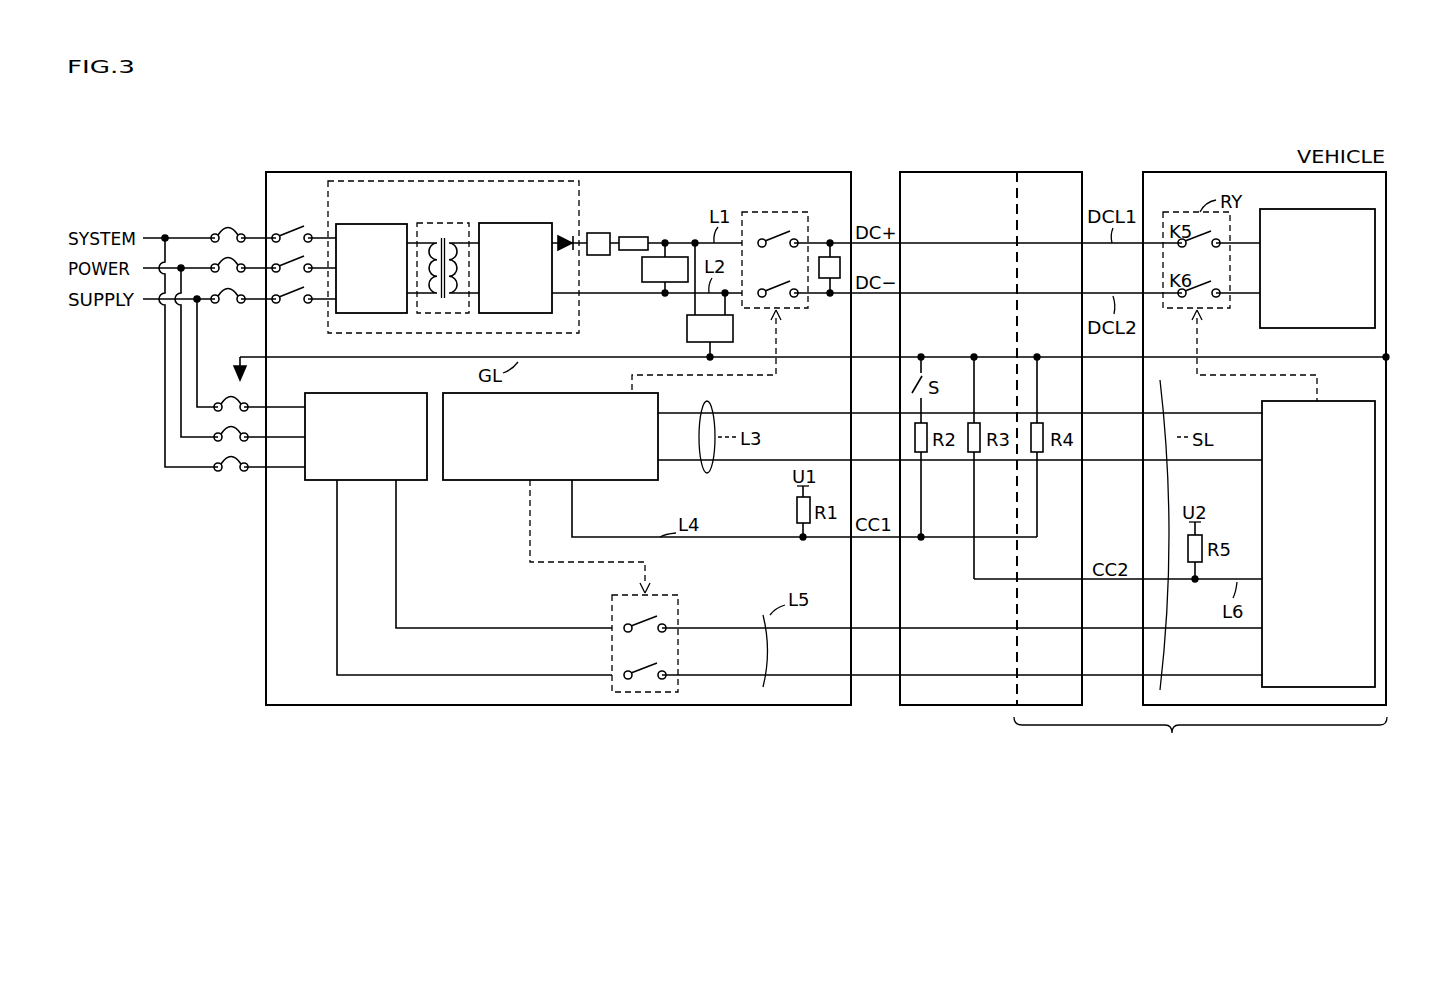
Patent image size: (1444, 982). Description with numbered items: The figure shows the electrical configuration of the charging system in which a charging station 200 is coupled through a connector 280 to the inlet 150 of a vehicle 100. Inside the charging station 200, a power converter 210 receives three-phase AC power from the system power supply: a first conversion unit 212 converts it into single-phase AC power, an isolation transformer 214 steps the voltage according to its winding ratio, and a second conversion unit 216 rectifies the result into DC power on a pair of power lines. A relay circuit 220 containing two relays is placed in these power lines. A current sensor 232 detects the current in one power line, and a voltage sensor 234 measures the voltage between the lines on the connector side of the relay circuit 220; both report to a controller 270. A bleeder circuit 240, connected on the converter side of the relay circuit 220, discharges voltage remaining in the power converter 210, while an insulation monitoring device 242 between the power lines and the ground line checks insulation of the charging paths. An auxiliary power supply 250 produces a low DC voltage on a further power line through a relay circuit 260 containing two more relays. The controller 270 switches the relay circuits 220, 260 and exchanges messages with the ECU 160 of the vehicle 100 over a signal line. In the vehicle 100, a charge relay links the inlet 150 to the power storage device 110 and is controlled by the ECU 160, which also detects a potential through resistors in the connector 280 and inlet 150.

The vehicle 100 is at (1200, 736).
The power storage device 110 is at (1377, 271).
The inlet 150 is at (1045, 172).
The ECU 160 is at (1377, 472).
The charging station 200 is at (714, 172).
The power converter 210 is at (453, 181).
The first conversion unit 212 is at (372, 224).
The isolation transformer 214 is at (440, 223).
The second conversion unit 216 is at (512, 223).
The relay circuit 220 is at (778, 212).
The current sensor 232 is at (597, 233).
The voltage sensor 234 is at (826, 280).
The bleeder circuit 240 is at (642, 270).
The insulation monitoring device 242 is at (687, 328).
The auxiliary power supply 250 is at (375, 393).
The relay circuit 260 is at (665, 595).
The controller 270 is at (558, 393).
The connector 280 is at (950, 172).